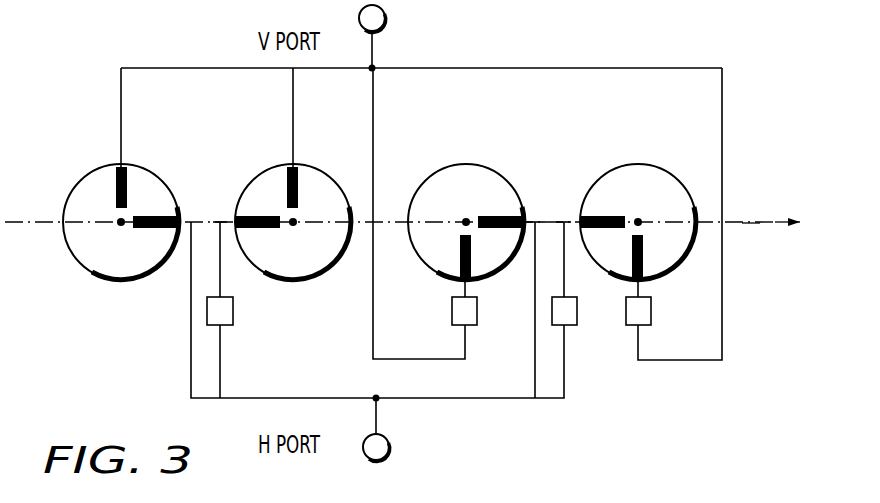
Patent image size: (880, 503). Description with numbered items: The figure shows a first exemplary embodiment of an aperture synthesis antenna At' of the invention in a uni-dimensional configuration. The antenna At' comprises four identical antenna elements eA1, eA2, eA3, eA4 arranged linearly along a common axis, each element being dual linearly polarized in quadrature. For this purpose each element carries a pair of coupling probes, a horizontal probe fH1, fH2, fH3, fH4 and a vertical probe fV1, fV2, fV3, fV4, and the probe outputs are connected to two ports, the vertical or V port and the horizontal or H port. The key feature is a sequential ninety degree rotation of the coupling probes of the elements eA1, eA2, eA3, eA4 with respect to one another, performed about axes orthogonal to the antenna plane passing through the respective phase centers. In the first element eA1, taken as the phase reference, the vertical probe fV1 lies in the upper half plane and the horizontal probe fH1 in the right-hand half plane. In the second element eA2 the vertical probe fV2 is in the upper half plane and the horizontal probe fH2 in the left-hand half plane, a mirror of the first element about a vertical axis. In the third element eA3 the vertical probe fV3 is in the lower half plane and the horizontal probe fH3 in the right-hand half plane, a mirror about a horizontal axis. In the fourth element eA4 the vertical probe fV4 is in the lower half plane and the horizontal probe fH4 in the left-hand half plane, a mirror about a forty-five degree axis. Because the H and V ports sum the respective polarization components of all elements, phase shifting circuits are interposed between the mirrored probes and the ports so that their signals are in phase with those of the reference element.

The antenna element eA1 is at (78, 266).
The antenna element eA2 is at (290, 286).
The antenna element eA3 is at (440, 163).
The antenna element eA4 is at (664, 162).
The vertical coupling probe fV1 is at (116, 192).
The horizontal coupling probe fH1 is at (152, 214).
The vertical coupling probe fV2 is at (298, 190).
The horizontal coupling probe fH2 is at (262, 216).
The vertical coupling probe fV3 is at (460, 258).
The horizontal coupling probe fH3 is at (507, 215).
The vertical coupling probe fV4 is at (643, 262).
The horizontal coupling probe fH4 is at (605, 217).
The antenna At' is at (402, 176).